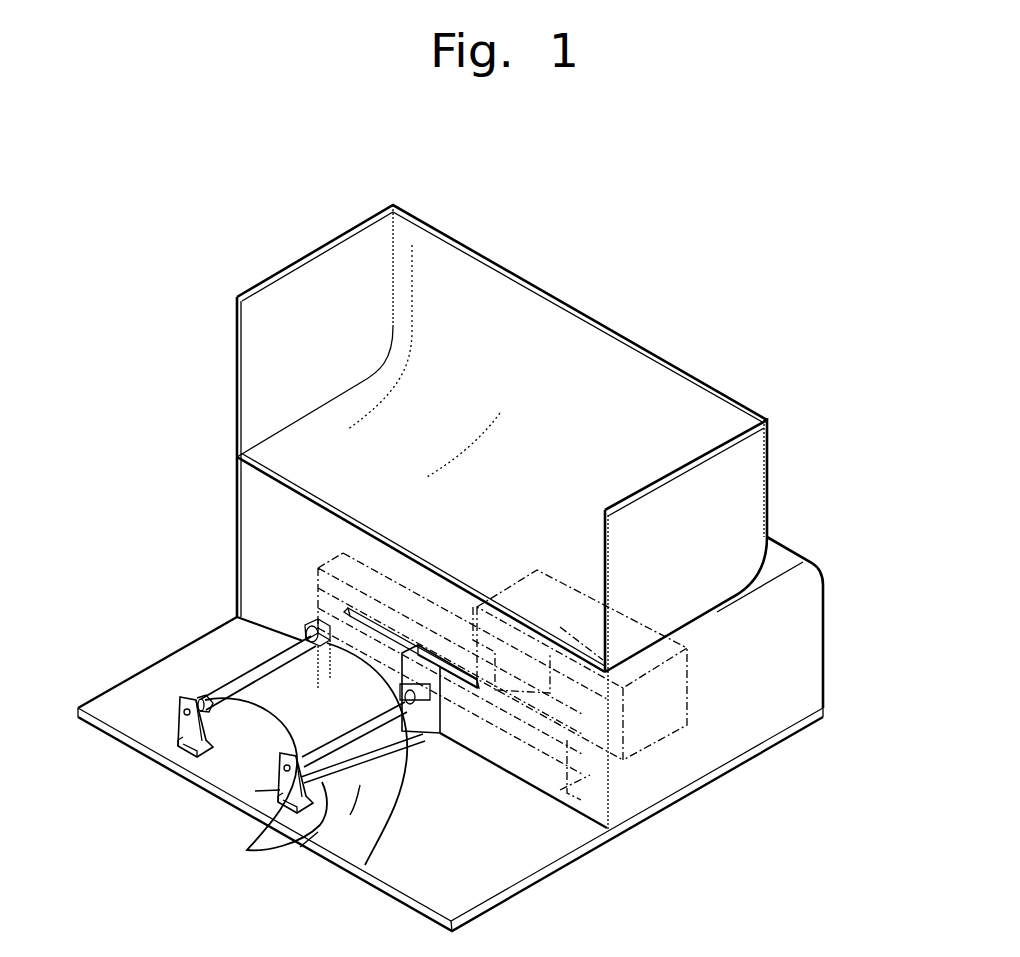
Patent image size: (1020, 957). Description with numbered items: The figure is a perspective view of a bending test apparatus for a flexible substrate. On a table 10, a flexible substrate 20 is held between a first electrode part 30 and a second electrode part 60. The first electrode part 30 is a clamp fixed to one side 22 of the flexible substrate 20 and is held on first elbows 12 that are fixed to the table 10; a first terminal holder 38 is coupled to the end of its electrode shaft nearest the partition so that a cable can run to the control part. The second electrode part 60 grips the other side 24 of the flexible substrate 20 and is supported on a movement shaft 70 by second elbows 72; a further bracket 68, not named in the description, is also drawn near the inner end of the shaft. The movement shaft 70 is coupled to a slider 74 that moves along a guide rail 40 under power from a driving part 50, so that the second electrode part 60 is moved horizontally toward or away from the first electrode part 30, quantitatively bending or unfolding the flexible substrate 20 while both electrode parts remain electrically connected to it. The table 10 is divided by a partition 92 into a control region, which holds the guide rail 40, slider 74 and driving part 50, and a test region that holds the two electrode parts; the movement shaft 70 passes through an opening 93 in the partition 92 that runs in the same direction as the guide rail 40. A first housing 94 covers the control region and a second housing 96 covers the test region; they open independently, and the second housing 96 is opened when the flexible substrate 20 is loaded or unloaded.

The table 10 is at (128, 693).
The first elbows 12 is at (187, 733).
The flexible substrate 20 is at (258, 688).
The one side of the flexible substrate 22 is at (216, 693).
The other side of the flexible substrate 24 is at (338, 753).
The first electrode part 30 is at (255, 662).
The first terminal holder 38 is at (318, 626).
The guide rail 40 is at (598, 747).
The driving part 50 is at (662, 710).
The second electrode part 60 is at (350, 815).
The fixing bracket 68 is at (443, 700).
The movement shaft 70 is at (300, 847).
The second elbows 72 is at (278, 790).
The slider 74 is at (527, 647).
The partition 92 is at (590, 793).
The opening 93 is at (255, 791).
The first housing 94 is at (807, 650).
The second housing 96 is at (760, 495).